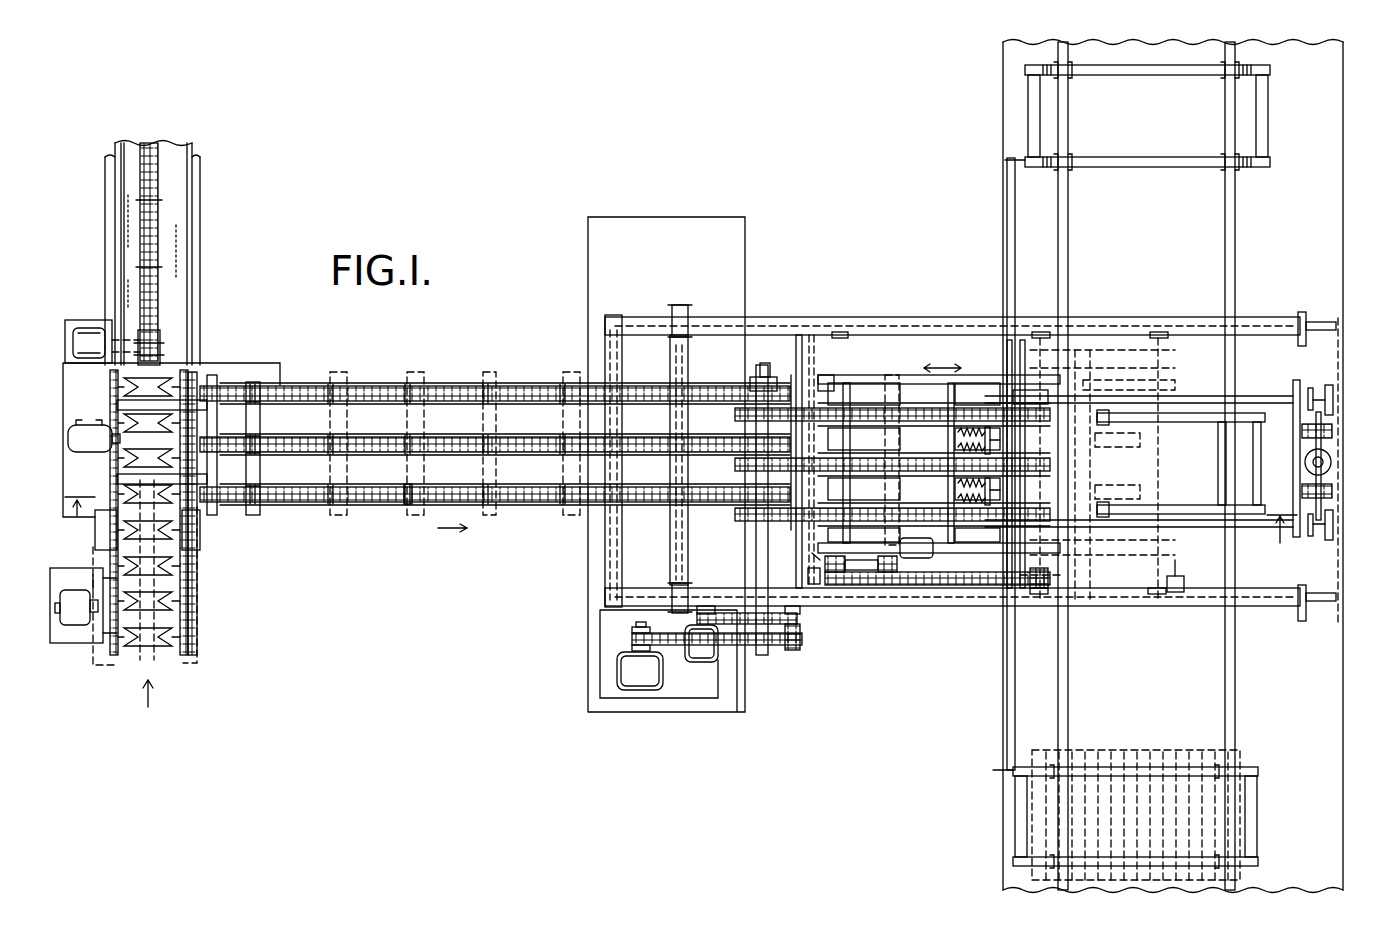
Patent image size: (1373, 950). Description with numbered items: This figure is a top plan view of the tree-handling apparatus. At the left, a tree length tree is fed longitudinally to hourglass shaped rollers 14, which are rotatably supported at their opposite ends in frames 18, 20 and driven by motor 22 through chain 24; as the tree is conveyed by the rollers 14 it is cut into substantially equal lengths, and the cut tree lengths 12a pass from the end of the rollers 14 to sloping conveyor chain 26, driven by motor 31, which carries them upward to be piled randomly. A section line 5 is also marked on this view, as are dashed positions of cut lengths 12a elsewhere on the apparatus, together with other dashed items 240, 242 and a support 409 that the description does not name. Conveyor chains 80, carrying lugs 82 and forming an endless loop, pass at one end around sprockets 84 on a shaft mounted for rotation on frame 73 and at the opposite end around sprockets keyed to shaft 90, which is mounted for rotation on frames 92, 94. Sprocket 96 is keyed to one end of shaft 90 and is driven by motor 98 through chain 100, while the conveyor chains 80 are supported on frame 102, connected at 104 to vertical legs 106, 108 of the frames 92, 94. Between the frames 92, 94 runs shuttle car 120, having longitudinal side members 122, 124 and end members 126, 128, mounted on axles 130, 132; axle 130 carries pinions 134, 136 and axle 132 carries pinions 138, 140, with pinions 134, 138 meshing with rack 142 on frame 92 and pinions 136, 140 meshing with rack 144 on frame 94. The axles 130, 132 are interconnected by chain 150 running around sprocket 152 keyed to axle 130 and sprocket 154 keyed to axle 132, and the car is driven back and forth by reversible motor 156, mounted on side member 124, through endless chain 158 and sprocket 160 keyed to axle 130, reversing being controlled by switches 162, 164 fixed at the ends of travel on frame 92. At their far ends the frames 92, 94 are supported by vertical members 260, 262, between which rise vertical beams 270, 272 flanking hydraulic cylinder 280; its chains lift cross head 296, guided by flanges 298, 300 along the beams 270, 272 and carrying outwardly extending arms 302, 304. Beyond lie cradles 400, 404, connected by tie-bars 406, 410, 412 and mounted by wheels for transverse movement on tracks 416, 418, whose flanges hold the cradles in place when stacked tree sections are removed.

The section line 5- 5 is at (681, 509).
The cut tree lengths 12a is at (420, 372).
The hourglass shaped rollers 14 is at (130, 655).
The frame 18 is at (95, 543).
The frame 20 is at (200, 543).
The motor 22 is at (70, 612).
The chain 24 is at (198, 636).
The sloping conveyor chain 26 is at (155, 248).
The motor 31 is at (86, 326).
The frame 73 is at (232, 362).
The conveyor chains 80 is at (452, 386).
The lugs 82 is at (408, 490).
The sprockets 84 is at (262, 383).
The shaft 90 is at (765, 363).
The frame 92 is at (897, 607).
The frame 94 is at (968, 318).
The sprocket 96 is at (790, 646).
The motor 98 is at (640, 690).
The chain 100 is at (658, 633).
The frame 102 is at (525, 383).
The connection 104 is at (588, 576).
The vertical leg 106 is at (672, 592).
The vertical leg 108 is at (677, 305).
The shuttle car 120 is at (917, 361).
The longitudinal side member 122 is at (975, 375).
The longitudinal side member 124 is at (968, 543).
The end member 126 is at (865, 440).
The end member 128 is at (1013, 397).
The axle 130 is at (847, 357).
The axle 132 is at (1046, 360).
The pinion 134 is at (828, 615).
The pinion 136 is at (840, 332).
The pinion 138 is at (1158, 606).
The pinion 140 is at (1040, 332).
The rack 142 is at (1268, 606).
The rack 144 is at (1255, 332).
The chain 150 is at (985, 585).
The sprocket 152 is at (840, 585).
The sprocket 154 is at (1048, 590).
The motor 156 is at (920, 558).
The endless chain 158 is at (862, 572).
The sprocket 160 is at (825, 558).
The switch 162 is at (808, 577).
The switch 164 is at (1178, 592).
The pusher spring unit 240 is at (1000, 490).
The pusher spring unit 242 is at (1000, 440).
The vertical member 260 is at (1312, 608).
The vertical member 262 is at (1312, 322).
The vertical beam 270 is at (1313, 530).
The vertical beam 272 is at (1320, 397).
The hydraulic cylinder 280 is at (1305, 462).
The cross head 296 is at (1298, 432).
The flange 298 is at (1328, 546).
The flange 300 is at (1308, 387).
The arm 302 is at (1257, 527).
The arm 304 is at (1250, 398).
The cradle 400 is at (1266, 817).
The cradle 404 is at (1199, 405).
The tie-bar 406 is at (1278, 133).
The track post 409 is at (1007, 710).
The tie-bar 410 is at (1008, 228).
The tie-bar 412 is at (1068, 228).
The track 416 is at (1235, 705).
The track 418 is at (1068, 703).